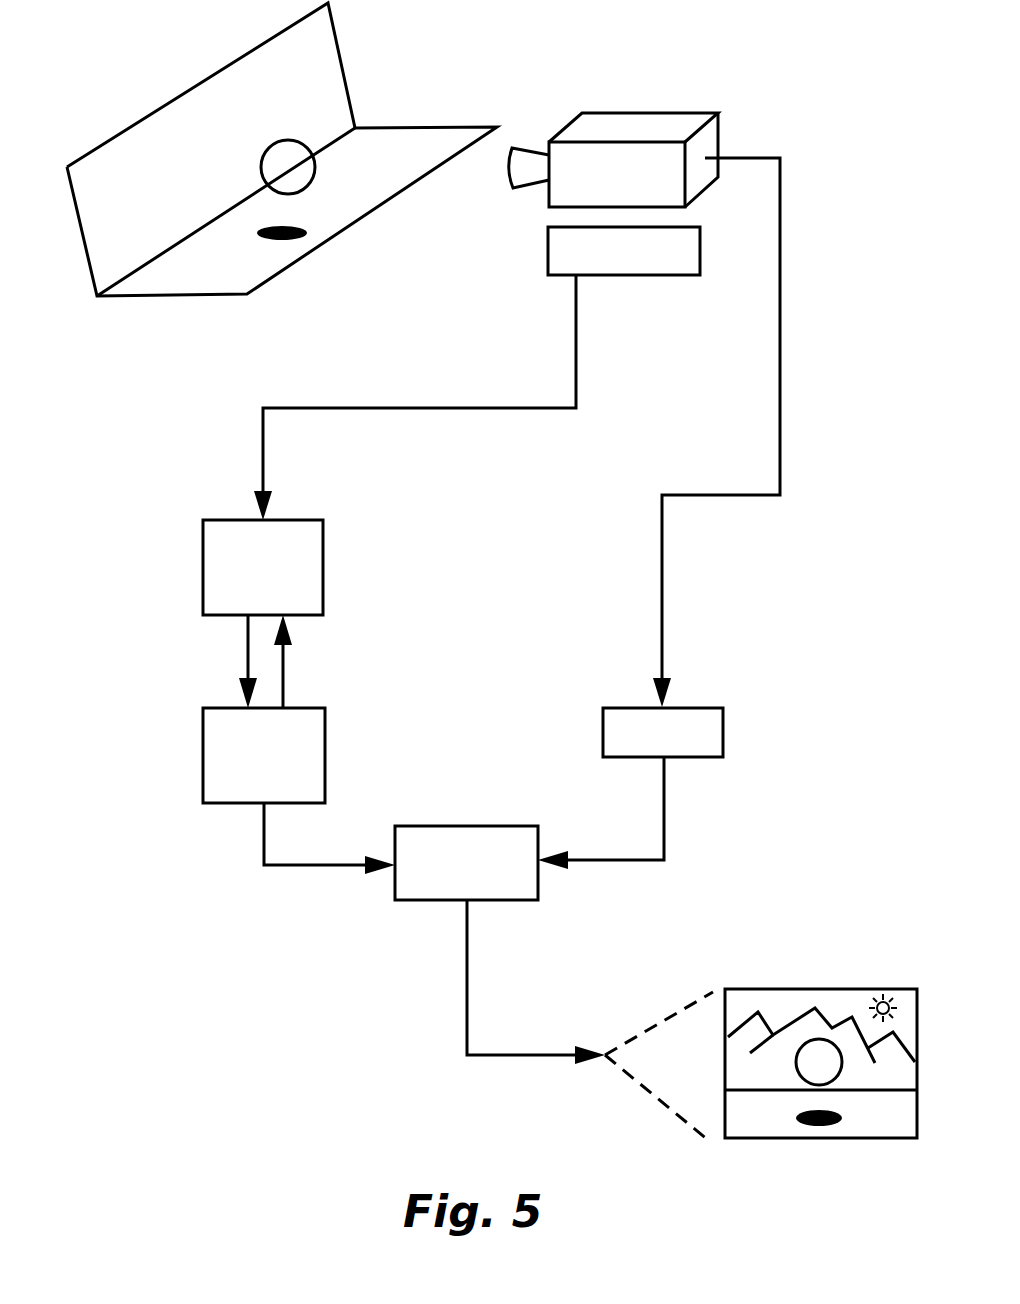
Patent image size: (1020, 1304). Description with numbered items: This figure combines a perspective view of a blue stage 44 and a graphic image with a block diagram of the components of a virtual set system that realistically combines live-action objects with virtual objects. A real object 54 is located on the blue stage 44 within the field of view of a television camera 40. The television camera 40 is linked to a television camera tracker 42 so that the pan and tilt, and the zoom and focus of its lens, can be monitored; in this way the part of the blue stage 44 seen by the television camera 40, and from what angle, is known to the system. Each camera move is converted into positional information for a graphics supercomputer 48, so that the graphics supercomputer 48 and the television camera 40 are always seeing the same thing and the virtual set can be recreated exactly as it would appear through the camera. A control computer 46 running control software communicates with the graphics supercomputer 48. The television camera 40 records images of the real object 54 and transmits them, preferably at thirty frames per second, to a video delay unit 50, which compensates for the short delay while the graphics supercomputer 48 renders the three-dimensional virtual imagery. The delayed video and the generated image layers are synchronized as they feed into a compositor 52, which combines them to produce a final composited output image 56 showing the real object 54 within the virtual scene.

The television camera 40 is at (707, 132).
The television camera tracker 42 is at (702, 255).
The blue stage 44 is at (345, 70).
The control computer 46 is at (323, 543).
The graphics supercomputer 48 is at (325, 762).
The video delay unit 50 is at (725, 727).
The compositor 52 is at (475, 823).
The real object 54 is at (317, 167).
The final composited output image 56 is at (760, 988).